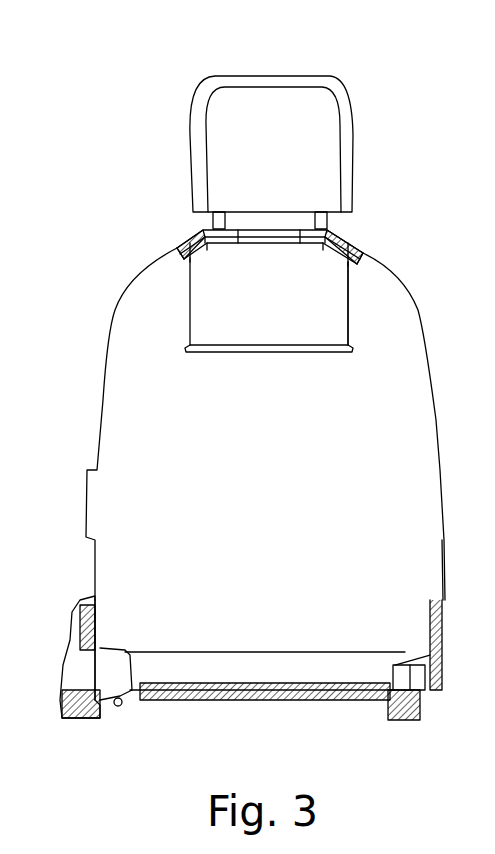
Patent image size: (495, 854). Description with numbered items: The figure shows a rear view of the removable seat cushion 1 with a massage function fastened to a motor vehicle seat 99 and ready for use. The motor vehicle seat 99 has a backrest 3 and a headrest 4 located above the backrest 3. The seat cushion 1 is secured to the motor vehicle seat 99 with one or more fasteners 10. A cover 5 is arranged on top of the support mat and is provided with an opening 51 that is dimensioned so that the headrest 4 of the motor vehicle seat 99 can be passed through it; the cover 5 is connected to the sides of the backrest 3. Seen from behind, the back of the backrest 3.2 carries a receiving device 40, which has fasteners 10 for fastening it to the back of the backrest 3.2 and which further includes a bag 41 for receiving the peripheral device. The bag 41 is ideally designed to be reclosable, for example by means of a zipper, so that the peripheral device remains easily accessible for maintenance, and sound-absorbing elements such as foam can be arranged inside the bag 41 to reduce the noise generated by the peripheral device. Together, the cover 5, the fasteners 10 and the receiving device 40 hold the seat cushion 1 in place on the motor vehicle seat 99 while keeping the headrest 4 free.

The seat cushion 1 is at (190, 232).
The backrest 3 is at (102, 345).
The back of the backrest 3.2 is at (251, 579).
The headrest 4 is at (273, 158).
The cover 5 is at (183, 235).
The fastener 10 is at (357, 232).
The receiving device 40 is at (353, 270).
The bag 41 is at (269, 305).
The opening 51 is at (290, 228).
The motor vehicle seat 99 is at (271, 123).